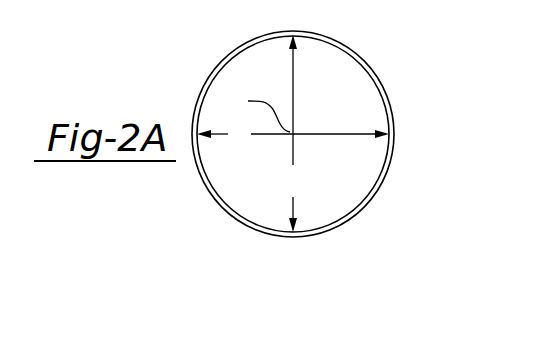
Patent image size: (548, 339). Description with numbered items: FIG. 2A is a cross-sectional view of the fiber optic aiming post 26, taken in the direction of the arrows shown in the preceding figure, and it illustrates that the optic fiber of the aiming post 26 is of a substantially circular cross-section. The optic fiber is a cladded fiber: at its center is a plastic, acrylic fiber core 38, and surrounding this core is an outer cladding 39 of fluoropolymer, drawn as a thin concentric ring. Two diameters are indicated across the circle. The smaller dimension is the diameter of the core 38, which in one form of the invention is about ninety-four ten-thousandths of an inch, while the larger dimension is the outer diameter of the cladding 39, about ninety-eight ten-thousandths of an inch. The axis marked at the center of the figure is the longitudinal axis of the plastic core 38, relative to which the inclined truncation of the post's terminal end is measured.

The aiming post 26 is at (369, 44).
The outer cladding 39 is at (392, 103).
The fiber core 38 is at (343, 168).